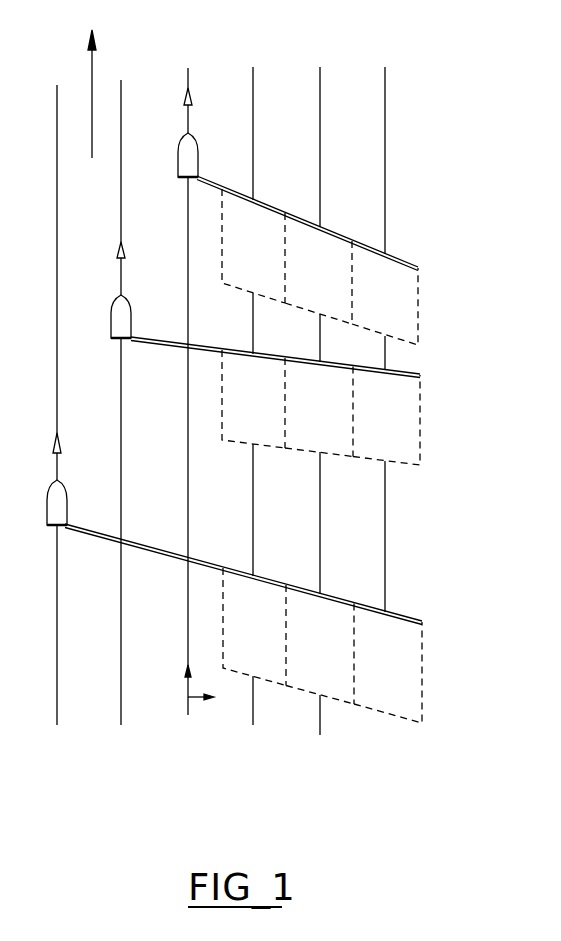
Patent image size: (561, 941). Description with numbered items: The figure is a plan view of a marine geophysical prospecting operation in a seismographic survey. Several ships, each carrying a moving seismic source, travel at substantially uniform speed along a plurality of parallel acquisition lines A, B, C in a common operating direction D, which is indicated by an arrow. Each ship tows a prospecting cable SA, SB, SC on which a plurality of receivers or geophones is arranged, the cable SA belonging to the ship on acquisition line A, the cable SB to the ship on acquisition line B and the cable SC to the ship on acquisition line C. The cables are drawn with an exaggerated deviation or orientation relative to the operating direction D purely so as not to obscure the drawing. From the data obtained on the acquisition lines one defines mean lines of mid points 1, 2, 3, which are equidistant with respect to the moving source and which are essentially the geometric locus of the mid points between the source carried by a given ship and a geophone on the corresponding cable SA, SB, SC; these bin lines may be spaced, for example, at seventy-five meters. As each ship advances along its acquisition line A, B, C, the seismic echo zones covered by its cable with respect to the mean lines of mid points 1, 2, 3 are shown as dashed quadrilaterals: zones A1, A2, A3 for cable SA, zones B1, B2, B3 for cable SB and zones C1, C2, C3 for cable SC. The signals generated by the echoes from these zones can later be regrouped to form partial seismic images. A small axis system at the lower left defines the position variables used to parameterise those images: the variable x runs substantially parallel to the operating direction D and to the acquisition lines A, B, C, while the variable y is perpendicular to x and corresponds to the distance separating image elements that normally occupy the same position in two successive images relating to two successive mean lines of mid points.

The acquisition line A is at (188, 381).
The acquisition line B is at (121, 386).
The acquisition line C is at (57, 386).
The operating direction D is at (92, 80).
The mean line of mid points 1 is at (252, 384).
The mean line of mid points 2 is at (319, 389).
The mean line of mid points 3 is at (384, 327).
The prospecting cable SA is at (340, 233).
The prospecting cable SB is at (333, 363).
The prospecting cable SC is at (363, 603).
The seismic echo zone A1 is at (253, 246).
The seismic echo zone A2 is at (318, 282).
The seismic echo zone A3 is at (385, 306).
The seismic echo zone B1 is at (253, 399).
The seismic echo zone B2 is at (319, 412).
The seismic echo zone B3 is at (386, 420).
The seismic echo zone C1 is at (254, 627).
The seismic echo zone C2 is at (320, 654).
The seismic echo zone C3 is at (388, 672).
The variable position x is at (177, 664).
The variable position y is at (203, 710).